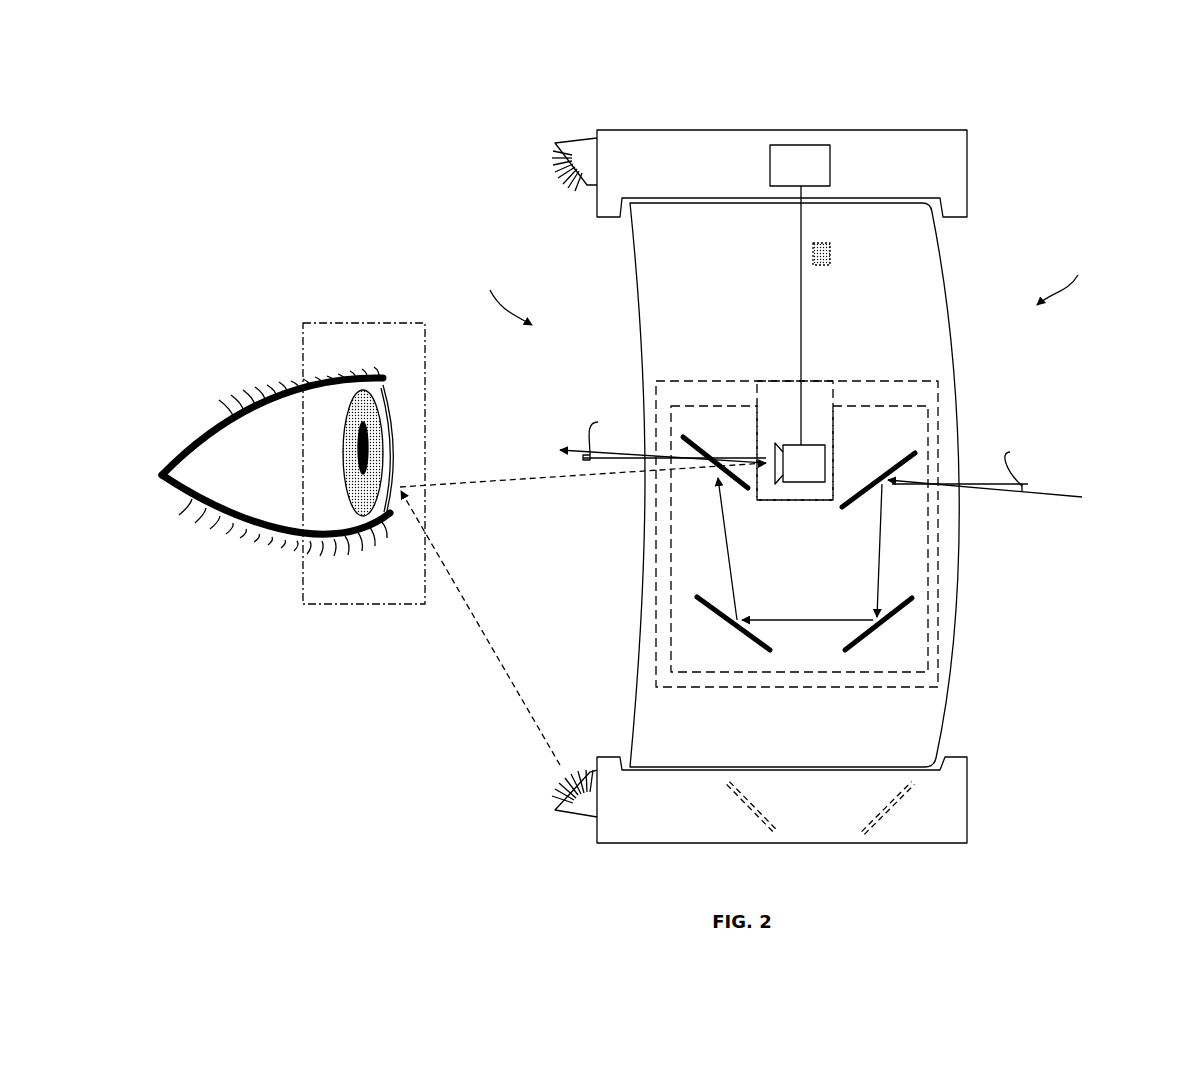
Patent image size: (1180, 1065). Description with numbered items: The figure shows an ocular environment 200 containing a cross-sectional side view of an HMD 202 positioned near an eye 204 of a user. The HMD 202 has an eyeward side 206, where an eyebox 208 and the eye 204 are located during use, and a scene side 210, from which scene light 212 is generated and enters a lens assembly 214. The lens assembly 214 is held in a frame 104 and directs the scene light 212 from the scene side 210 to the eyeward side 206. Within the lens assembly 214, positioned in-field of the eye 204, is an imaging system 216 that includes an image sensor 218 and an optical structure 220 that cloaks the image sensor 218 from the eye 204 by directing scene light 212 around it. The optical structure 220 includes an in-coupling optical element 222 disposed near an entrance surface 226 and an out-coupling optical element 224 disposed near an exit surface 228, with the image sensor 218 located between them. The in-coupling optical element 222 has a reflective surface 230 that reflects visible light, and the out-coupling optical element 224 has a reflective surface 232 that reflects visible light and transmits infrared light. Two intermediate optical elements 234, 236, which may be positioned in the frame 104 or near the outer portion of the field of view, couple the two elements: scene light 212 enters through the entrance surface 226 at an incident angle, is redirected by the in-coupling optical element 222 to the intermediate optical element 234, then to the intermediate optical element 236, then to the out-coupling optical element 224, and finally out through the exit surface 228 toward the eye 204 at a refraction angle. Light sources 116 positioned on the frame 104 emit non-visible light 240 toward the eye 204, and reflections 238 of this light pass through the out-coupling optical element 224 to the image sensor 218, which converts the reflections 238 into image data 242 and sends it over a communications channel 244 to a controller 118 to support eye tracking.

The ocular environment 200 is at (671, 439).
The HMD 202 is at (957, 97).
The frame 104 is at (782, 486).
The light sources 116 is at (575, 138).
The controller 118 is at (800, 165).
The eye 204 is at (238, 392).
The eyeward side 206 is at (486, 267).
The eyebox 208 is at (357, 604).
The scene side 210 is at (1068, 249).
The scene light 212 is at (1034, 489).
The lens assembly 214 is at (819, 505).
The imaging system 216 is at (744, 381).
The image sensor 218 is at (812, 445).
The optical structure 220 is at (885, 405).
The in-coupling optical element 222 is at (903, 447).
The out-coupling optical element 224 is at (692, 431).
The entrance surface 226 is at (951, 701).
The exit surface 228 is at (635, 684).
The reflective surface 230 is at (850, 515).
The reflective surface 232 is at (741, 499).
The intermediate optical element 234 is at (858, 640).
The intermediate optical element 236 is at (750, 642).
The reflections 238 is at (492, 482).
The non-visible light 240 is at (498, 658).
The image data 242 is at (831, 256).
The communications channel 244 is at (801, 295).